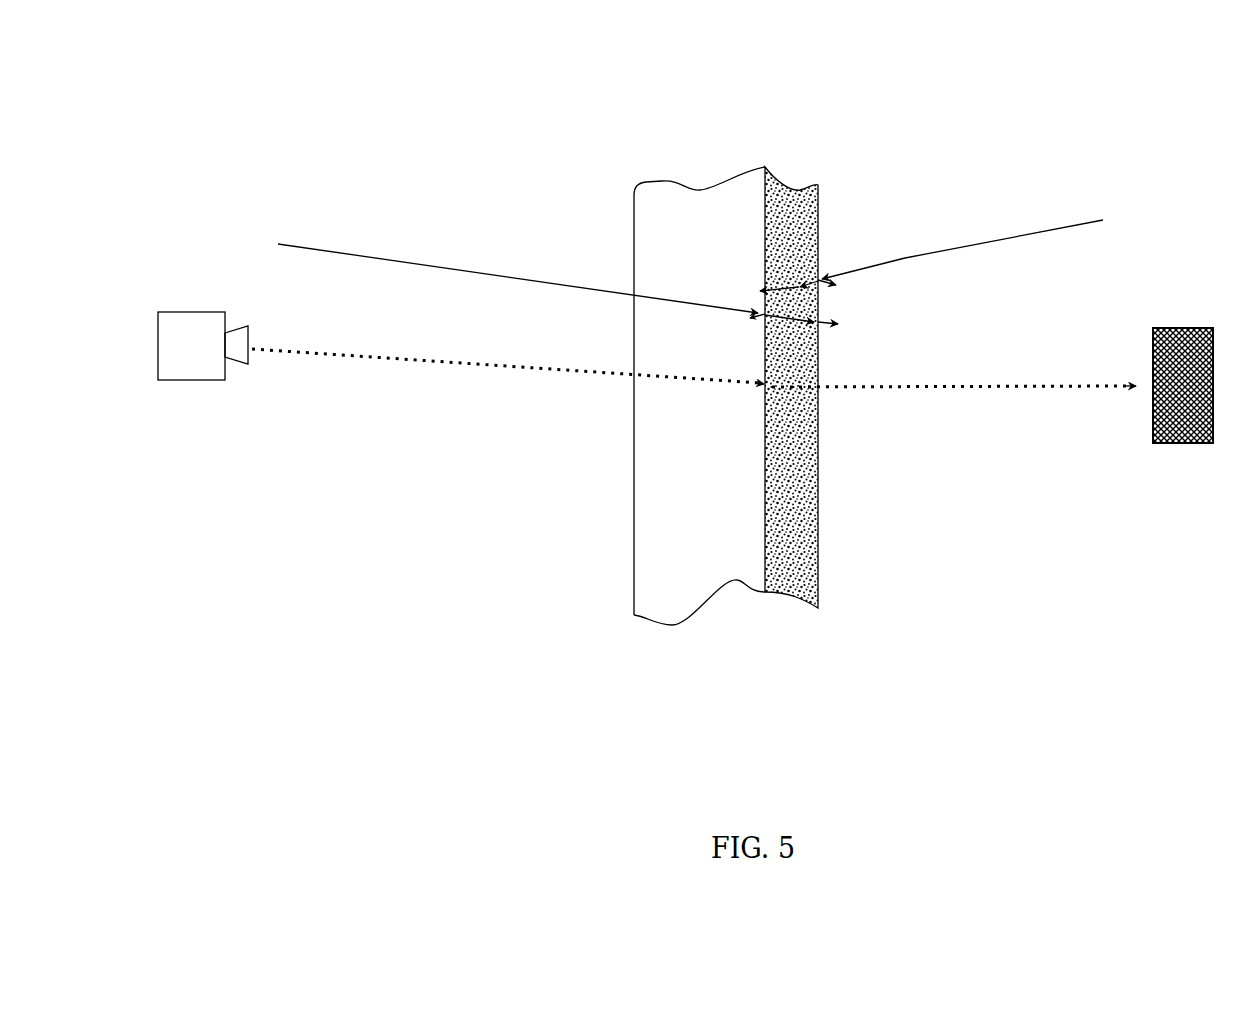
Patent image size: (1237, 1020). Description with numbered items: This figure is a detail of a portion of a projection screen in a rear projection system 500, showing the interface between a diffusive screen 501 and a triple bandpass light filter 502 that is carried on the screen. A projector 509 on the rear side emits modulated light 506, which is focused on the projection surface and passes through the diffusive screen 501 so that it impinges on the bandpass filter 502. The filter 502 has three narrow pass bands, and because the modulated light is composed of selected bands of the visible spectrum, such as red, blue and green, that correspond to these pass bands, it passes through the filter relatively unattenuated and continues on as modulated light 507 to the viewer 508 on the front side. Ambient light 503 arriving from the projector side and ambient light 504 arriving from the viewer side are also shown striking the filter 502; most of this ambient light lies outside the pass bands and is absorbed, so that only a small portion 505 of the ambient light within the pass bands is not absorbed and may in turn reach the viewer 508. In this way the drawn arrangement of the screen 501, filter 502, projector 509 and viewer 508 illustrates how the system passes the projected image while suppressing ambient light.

The optical system 500 is at (876, 105).
The diffusive screen 501 is at (694, 190).
The triple bandpass light filter 502 is at (796, 186).
The ambient light 503 is at (415, 258).
The ambient light from target side 504 is at (1030, 236).
The small portion of ambient light 505 is at (848, 310).
The modulated light 506 is at (420, 361).
The modulated light 507 is at (907, 392).
The viewer 508 is at (1157, 328).
The projector 509 is at (208, 380).